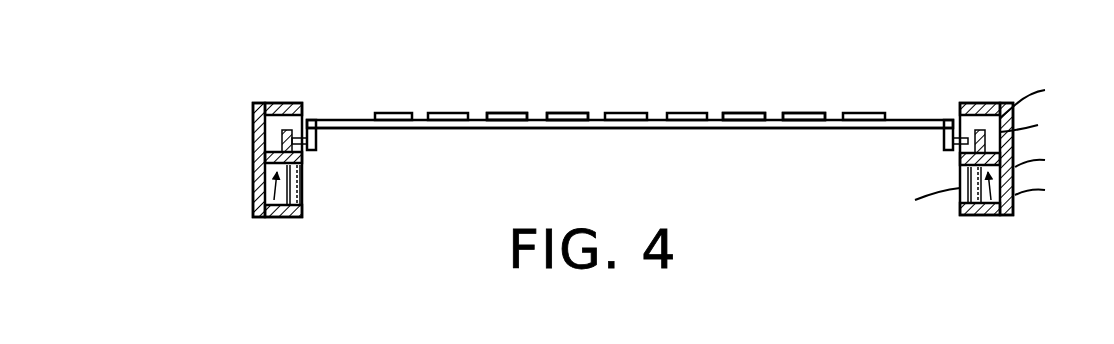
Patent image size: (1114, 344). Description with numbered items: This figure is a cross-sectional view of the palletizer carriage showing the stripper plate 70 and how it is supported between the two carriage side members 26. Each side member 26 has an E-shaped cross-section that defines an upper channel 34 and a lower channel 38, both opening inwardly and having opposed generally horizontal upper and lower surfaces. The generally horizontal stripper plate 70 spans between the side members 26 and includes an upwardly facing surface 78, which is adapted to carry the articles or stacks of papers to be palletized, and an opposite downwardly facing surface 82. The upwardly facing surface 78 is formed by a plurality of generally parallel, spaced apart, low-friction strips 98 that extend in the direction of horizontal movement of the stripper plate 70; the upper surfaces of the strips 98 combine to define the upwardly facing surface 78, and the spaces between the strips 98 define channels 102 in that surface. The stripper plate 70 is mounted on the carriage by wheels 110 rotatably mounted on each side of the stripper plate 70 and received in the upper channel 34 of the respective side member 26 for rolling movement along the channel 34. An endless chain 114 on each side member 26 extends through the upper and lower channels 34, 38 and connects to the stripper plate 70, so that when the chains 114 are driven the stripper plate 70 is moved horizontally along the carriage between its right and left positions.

The stripper plate 70 is at (633, 80).
The upwardly facing surface 78 is at (682, 110).
The downwardly facing surface 82 is at (712, 128).
The low-friction strips 98 is at (830, 113).
The channels 102 is at (598, 113).
The side members 26 is at (255, 108).
The upper channel 34 is at (272, 127).
The lower channel 38 is at (261, 217).
The wheels 110 is at (275, 140).
The endless chain 114 is at (303, 193).